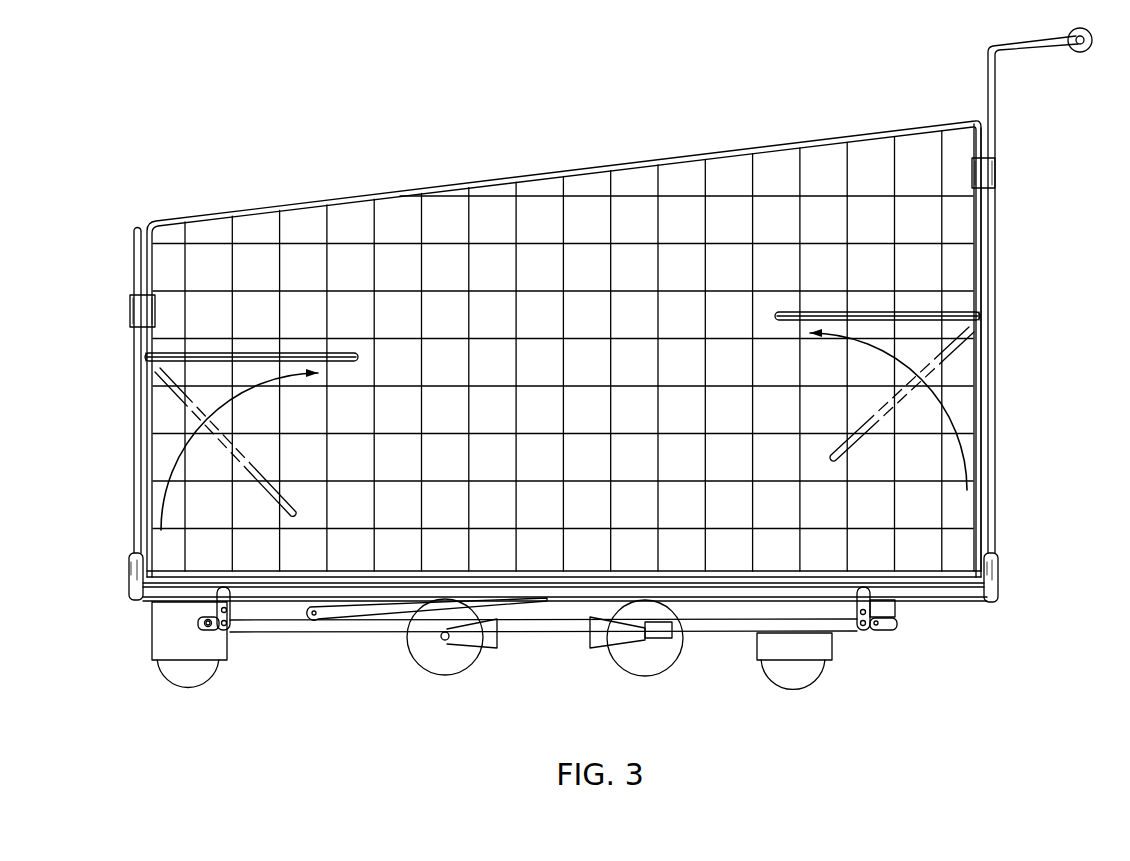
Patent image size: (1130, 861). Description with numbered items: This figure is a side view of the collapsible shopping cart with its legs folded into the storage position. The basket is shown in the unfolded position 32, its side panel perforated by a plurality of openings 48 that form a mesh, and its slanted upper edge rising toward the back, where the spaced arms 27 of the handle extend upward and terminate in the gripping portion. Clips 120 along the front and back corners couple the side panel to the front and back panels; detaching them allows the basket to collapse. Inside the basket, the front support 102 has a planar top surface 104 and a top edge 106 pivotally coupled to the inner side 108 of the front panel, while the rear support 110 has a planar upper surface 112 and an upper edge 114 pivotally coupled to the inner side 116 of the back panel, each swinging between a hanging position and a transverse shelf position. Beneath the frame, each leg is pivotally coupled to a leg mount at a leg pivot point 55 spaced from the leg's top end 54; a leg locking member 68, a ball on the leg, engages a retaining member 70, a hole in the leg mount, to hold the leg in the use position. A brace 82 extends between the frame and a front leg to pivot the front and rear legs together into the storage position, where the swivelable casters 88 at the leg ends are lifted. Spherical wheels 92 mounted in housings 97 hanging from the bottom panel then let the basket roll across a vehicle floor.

The spaced arms 27 is at (1027, 52).
The unfolded position 32 is at (117, 307).
The openings 48 is at (440, 232).
The top end 54 is at (200, 625).
The leg pivot point 55 is at (212, 652).
The leg locking member 68 is at (195, 645).
The retaining member 70 is at (233, 610).
The brace 82 is at (377, 607).
The swivelable caster 88 is at (442, 675).
The wheel 92 is at (172, 688).
The housing 97 is at (150, 612).
The front support 102 is at (360, 355).
The top surface 104 is at (262, 352).
The top edge 106 is at (143, 357).
The inner side 108 is at (158, 280).
The rear support 110 is at (775, 312).
The upper surface 112 is at (832, 312).
The upper edge 114 is at (983, 313).
The inner side 116 is at (972, 202).
The clip 120 is at (137, 303).